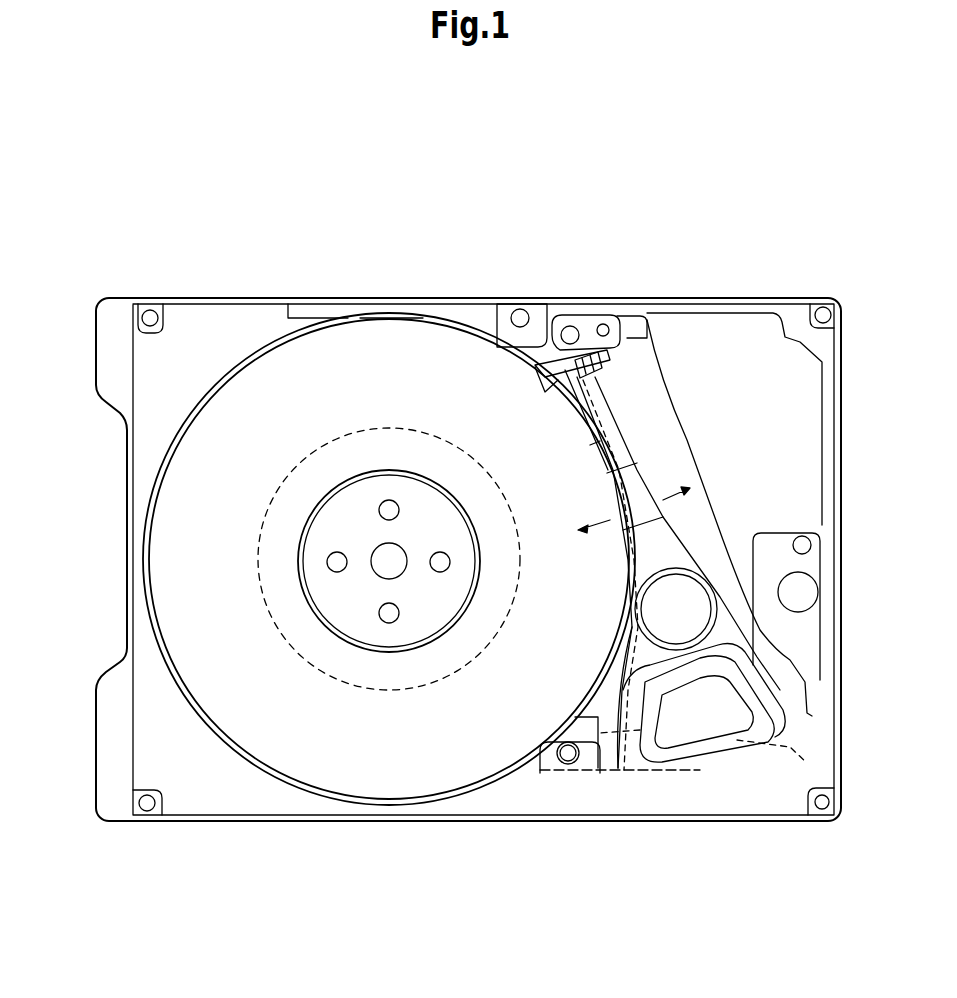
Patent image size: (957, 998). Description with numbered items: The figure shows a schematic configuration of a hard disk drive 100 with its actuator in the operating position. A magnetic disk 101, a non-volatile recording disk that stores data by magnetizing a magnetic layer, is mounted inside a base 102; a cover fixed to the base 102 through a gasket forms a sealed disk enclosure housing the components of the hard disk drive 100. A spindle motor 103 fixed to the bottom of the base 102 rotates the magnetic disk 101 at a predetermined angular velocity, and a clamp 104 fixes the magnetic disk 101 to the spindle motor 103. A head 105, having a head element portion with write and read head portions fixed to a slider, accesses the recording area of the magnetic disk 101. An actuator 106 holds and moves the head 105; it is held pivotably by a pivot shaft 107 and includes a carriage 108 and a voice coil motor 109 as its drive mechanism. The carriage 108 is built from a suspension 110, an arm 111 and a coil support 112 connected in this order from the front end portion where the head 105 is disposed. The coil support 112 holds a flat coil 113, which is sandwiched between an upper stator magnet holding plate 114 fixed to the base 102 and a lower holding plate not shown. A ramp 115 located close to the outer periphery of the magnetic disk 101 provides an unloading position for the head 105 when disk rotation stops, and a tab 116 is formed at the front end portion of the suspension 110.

The hard disk drive 100 is at (762, 278).
The magnetic disk 101 is at (358, 787).
The base 102 is at (163, 765).
The spindle motor 103 is at (283, 545).
The clamp 104 is at (403, 633).
The head 105 is at (600, 380).
The actuator 106 is at (733, 588).
The pivot shaft 107 is at (660, 615).
The carriage 108 is at (693, 550).
The voice coil motor 109 is at (683, 777).
The suspension 110 is at (607, 418).
The arm 111 is at (660, 525).
The coil support 112 is at (602, 653).
The flat coil 113 is at (730, 740).
The upper stator magnet holding plate 114 is at (582, 736).
The ramp 115 is at (552, 335).
The tab 116 is at (573, 395).